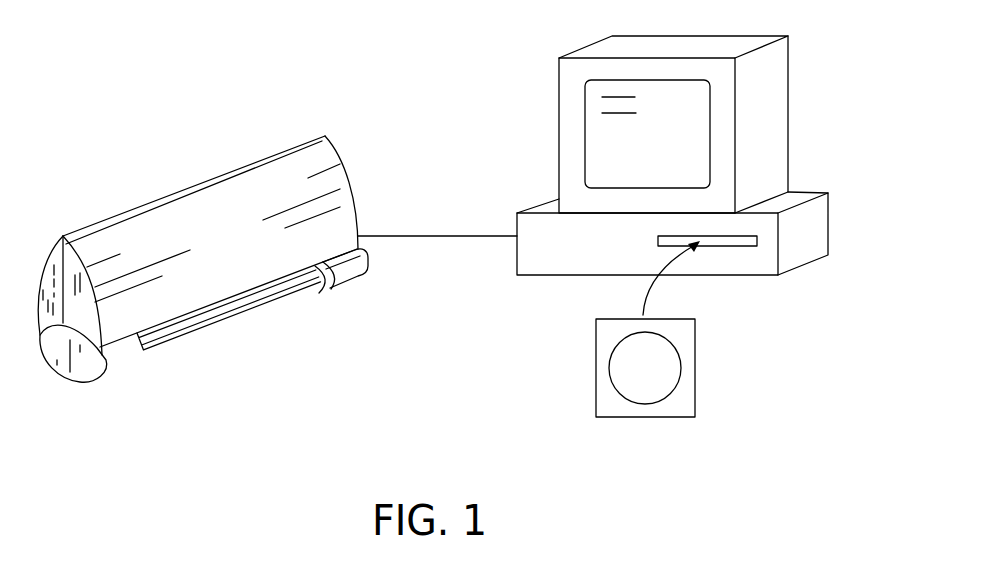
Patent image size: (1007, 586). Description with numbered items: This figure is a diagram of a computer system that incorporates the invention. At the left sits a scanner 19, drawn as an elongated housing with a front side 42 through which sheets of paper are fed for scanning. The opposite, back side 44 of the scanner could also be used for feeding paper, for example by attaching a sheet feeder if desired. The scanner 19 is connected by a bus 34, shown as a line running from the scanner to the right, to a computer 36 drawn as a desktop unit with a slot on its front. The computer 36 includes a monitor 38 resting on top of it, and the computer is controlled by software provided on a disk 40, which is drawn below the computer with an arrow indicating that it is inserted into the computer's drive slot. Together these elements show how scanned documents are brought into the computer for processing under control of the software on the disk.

The scanner 19 is at (281, 151).
The back side 44 is at (119, 206).
The front side 42 is at (231, 355).
The bus 34 is at (421, 239).
The computer 36 is at (822, 220).
The monitor 38 is at (772, 97).
The disk 40 is at (688, 360).